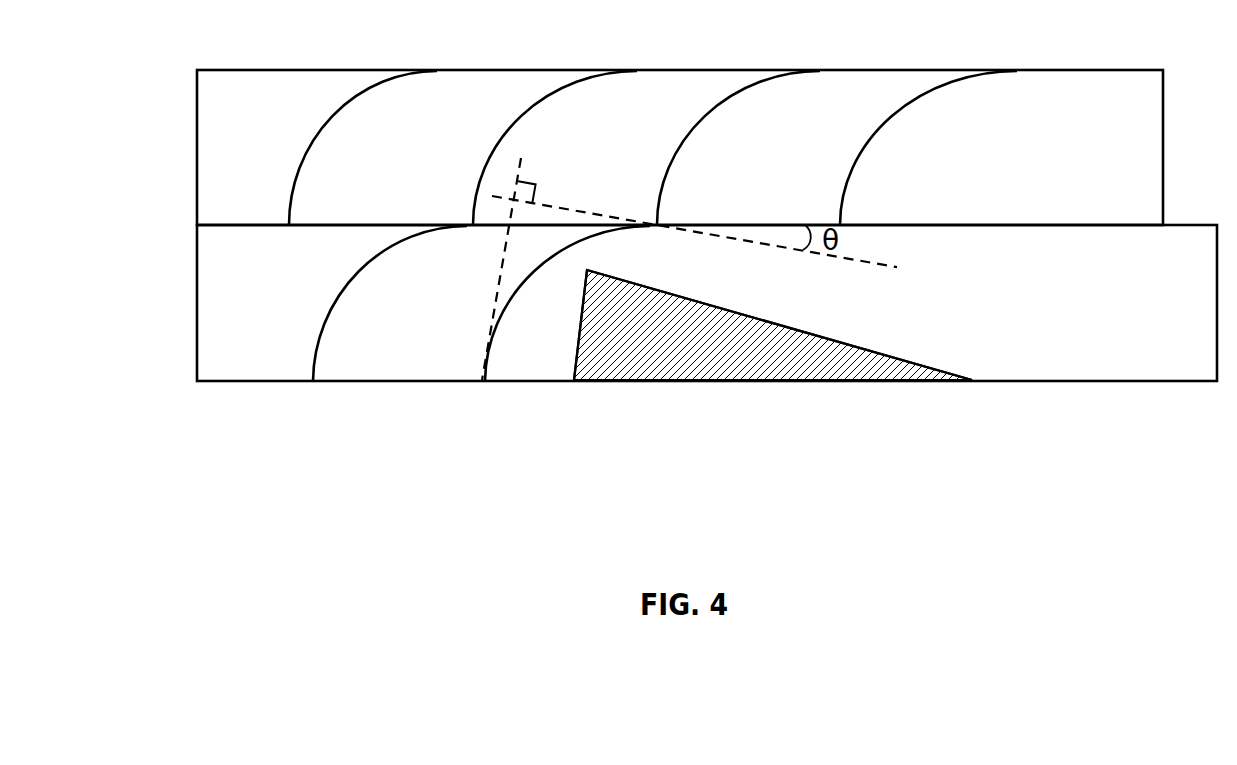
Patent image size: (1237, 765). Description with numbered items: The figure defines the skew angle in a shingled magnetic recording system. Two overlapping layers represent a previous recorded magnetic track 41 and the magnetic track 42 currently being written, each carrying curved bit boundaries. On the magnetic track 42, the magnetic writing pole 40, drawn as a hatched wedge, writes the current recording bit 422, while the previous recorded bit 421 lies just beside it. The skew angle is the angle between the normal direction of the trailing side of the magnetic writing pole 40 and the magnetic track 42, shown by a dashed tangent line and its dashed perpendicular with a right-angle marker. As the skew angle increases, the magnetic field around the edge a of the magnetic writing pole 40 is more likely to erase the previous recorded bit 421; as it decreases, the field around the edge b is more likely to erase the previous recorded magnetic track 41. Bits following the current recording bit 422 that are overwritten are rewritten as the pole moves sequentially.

The magnetic writing pole 40 is at (698, 341).
The previous recorded magnetic track 41 is at (680, 147).
The magnetic track 42 is at (707, 303).
The previous recorded bit 421 is at (334, 342).
The current recording bit 422 is at (506, 342).
The edge of the magnetic writing pole a is at (566, 342).
The edge of the magnetic writing pole b is at (797, 318).